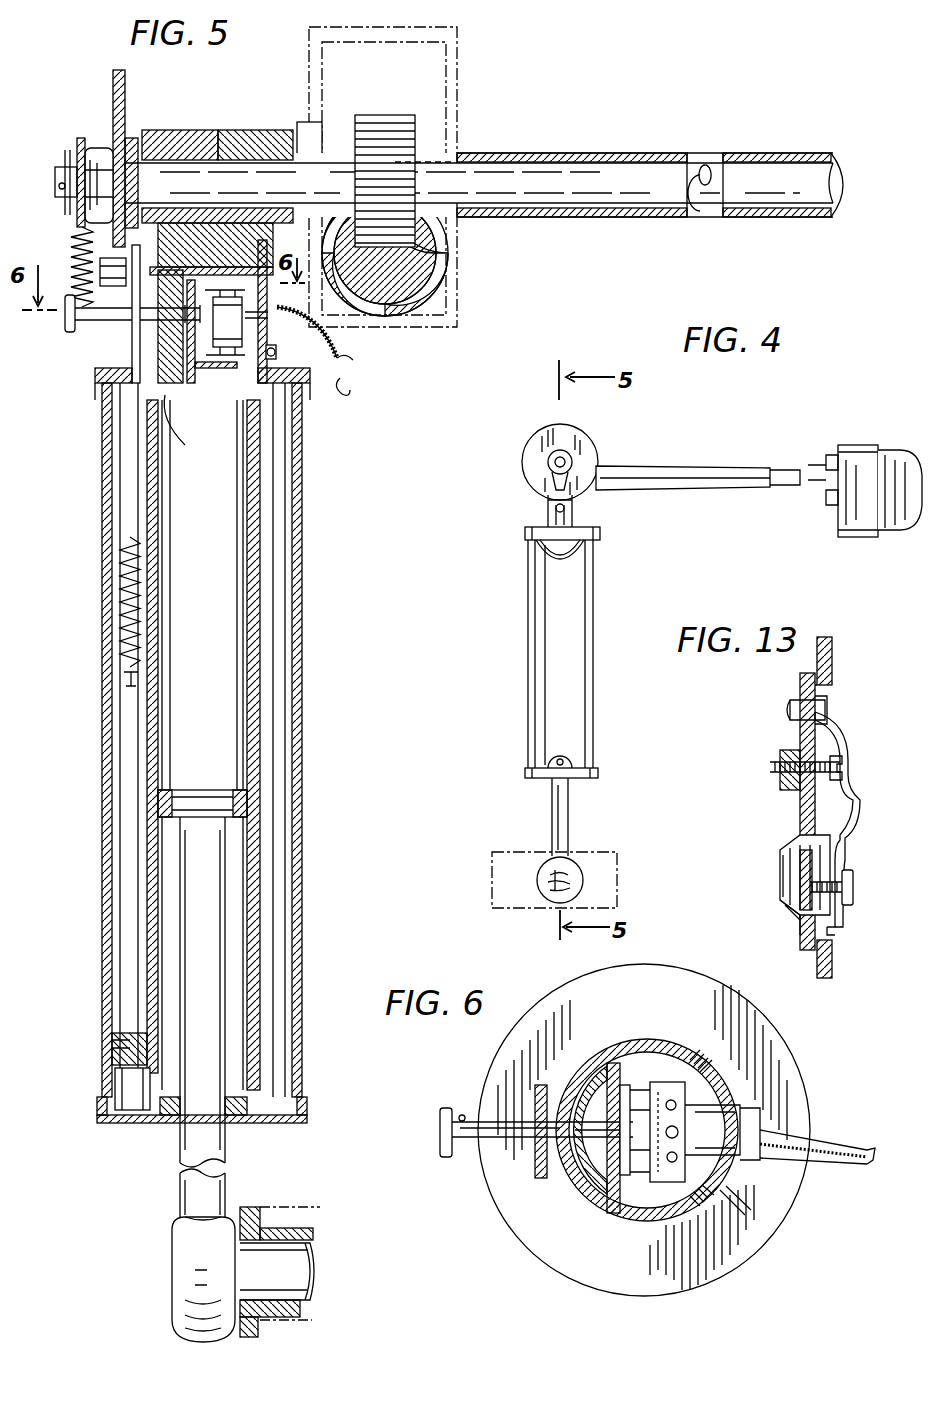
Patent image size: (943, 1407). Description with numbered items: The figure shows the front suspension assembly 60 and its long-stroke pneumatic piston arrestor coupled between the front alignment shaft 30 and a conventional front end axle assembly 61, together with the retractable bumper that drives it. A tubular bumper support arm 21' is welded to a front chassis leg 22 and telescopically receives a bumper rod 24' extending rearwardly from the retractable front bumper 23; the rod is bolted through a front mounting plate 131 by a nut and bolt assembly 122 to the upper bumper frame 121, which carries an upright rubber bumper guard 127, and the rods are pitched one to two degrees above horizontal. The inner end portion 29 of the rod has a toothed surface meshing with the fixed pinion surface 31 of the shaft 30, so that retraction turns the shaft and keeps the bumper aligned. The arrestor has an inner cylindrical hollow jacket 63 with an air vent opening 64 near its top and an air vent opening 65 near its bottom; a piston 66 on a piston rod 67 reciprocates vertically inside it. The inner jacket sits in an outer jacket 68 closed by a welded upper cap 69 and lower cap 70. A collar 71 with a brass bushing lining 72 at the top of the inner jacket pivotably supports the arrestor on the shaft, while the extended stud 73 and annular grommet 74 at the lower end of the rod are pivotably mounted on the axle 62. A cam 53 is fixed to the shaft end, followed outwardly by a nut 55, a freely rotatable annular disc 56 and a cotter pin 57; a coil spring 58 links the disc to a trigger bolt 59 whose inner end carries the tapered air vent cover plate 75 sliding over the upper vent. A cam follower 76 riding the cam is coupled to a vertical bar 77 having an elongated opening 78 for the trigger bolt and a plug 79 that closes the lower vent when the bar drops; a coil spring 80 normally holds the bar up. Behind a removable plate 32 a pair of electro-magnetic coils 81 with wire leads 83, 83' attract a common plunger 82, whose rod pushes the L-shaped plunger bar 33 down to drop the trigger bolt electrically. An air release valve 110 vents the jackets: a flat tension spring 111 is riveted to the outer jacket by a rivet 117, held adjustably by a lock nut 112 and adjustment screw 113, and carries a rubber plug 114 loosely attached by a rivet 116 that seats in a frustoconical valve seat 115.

In FIG. 5, the tubular bumper support arm 21' is at (394, 282).
In FIG. 4, the tubular bumper support arm 21' is at (698, 461).
In FIG. 5, the front chassis leg 22 is at (460, 298).
In FIG. 4, the retractable front bumper 23 is at (850, 538).
In FIG. 4, the bumper rod 24' is at (774, 458).
In FIG. 5, the inner end portion 29 is at (394, 305).
In FIG. 5, the front alignment shaft 30 is at (590, 165).
In FIG. 5, the pinion surface 31 is at (388, 125).
In FIG. 5, the removable plate 32 is at (278, 353).
In FIG. 6, the removable plate 32 is at (724, 1200).
In FIG. 5, the L-shaped plunger bar 33 is at (217, 338).
In FIG. 6, the L-shaped plunger bar 33 is at (633, 1135).
In FIG. 5, the cam 53 is at (128, 73).
In FIG. 4, the cam 53 is at (590, 452).
In FIG. 5, the nut 55 is at (100, 148).
In FIG. 5, the annular disc 56 is at (79, 140).
In FIG. 4, the annular disc 56 is at (552, 462).
In FIG. 5, the cotter pin 57 is at (55, 183).
In FIG. 5, the coil spring 58 is at (68, 305).
In FIG. 4, the coil spring 58 is at (550, 500).
In FIG. 6, the coil spring 58 is at (458, 1112).
In FIG. 5, the trigger bolt 59 is at (105, 322).
In FIG. 6, the trigger bolt 59 is at (500, 1137).
In FIG. 5, the front suspension assembly 60 is at (318, 745).
In FIG. 4, the front suspension assembly 60 is at (612, 718).
In FIG. 5, the front end axle assembly 61 is at (318, 1222).
In FIG. 4, the front end axle assembly 61 is at (620, 900).
In FIG. 5, the axle 62 is at (312, 1262).
In FIG. 5, the inner cylindrical hollow jacket 63 is at (150, 737).
In FIG. 6, the inner cylindrical hollow jacket 63 is at (645, 1045).
In FIG. 5, the air vent opening 64 is at (202, 742).
In FIG. 4, the air vent opening 64 is at (578, 565).
In FIG. 5, the air vent opening 65 is at (130, 1122).
In FIG. 4, the air vent opening 65 is at (574, 760).
In FIG. 5, the piston 66 is at (200, 790).
In FIG. 5, the piston rod 67 is at (226, 1146).
In FIG. 4, the piston rod 67 is at (555, 822).
In FIG. 5, the outer jacket 68 is at (102, 895).
In FIG. 4, the outer jacket 68 is at (588, 637).
In FIG. 13, the outer jacket 68 is at (833, 968).
In FIG. 5, the upper cap 69 is at (100, 375).
In FIG. 4, the upper cap 69 is at (596, 526).
In FIG. 6, the upper cap 69 is at (562, 1272).
In FIG. 5, the lower cap 70 is at (300, 1123).
In FIG. 4, the lower cap 70 is at (596, 778).
In FIG. 5, the collar 71 is at (211, 130).
In FIG. 5, the brass bushing lining 72 is at (248, 130).
In FIG. 5, the extended stud 73 is at (178, 1306).
In FIG. 4, the extended stud 73 is at (576, 864).
In FIG. 5, the annular grommet 74 is at (300, 1308).
In FIG. 5, the air vent cover plate 75 is at (196, 370).
In FIG. 6, the air vent cover plate 75 is at (598, 1072).
In FIG. 5, the cam follower 76 is at (93, 262).
In FIG. 5, the bar 77 is at (102, 452).
In FIG. 6, the bar 77 is at (543, 1180).
In FIG. 5, the elongated opening 78 is at (130, 352).
In FIG. 5, the plug 79 is at (120, 1038).
In FIG. 5, the coil spring 80 is at (120, 583).
In FIG. 5, the electro-magnetic coil 81 is at (242, 320).
In FIG. 6, the electro-magnetic coil 81 is at (692, 1100).
In FIG. 5, the plunger 82 is at (250, 235).
In FIG. 6, the plunger 82 is at (652, 1182).
In FIG. 5, the wire lead 83 is at (335, 338).
In FIG. 6, the wire lead 83 is at (817, 1147).
In FIG. 5, the wire lead 83' is at (355, 391).
In FIG. 13, the air release valve 110 is at (858, 792).
In FIG. 13, the flat tension spring 111 is at (842, 851).
In FIG. 13, the lock nut 112 is at (800, 782).
In FIG. 13, the adjustment screw 113 is at (840, 760).
In FIG. 13, the rubber plug 114 is at (805, 918).
In FIG. 13, the valve seat 115 is at (805, 845).
In FIG. 13, the rivet 116 is at (848, 895).
In FIG. 13, the rivet 117 is at (828, 710).
In FIG. 4, the upper bumper frame 121 is at (852, 445).
In FIG. 4, the nut and bolt assembly 122 is at (830, 500).
In FIG. 4, the rubber bumper guard 127 is at (900, 450).
In FIG. 4, the front mounting plate 131 is at (858, 530).